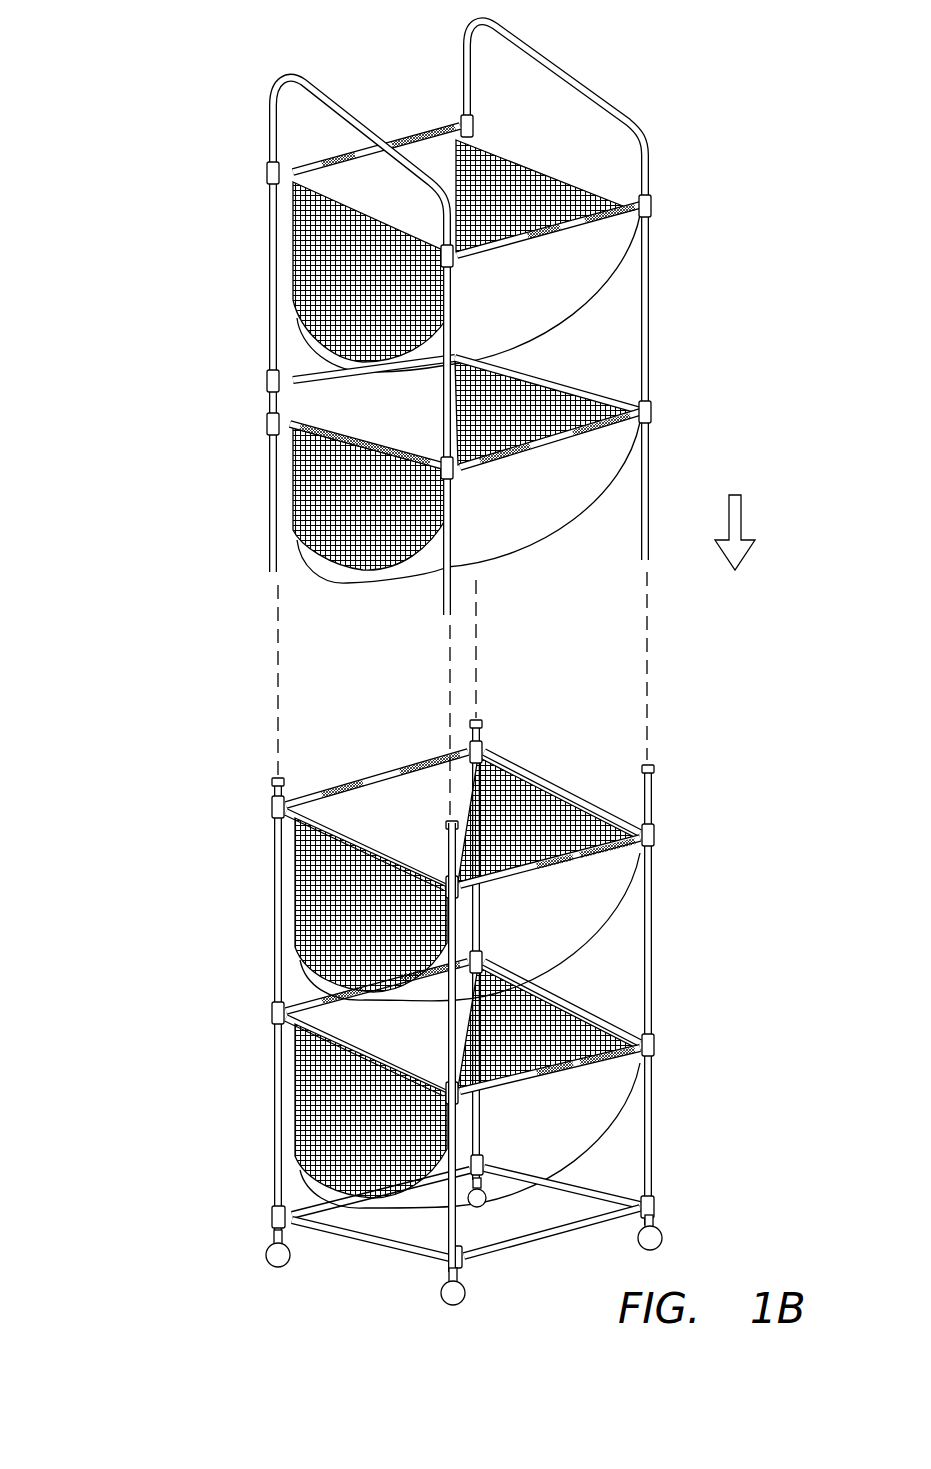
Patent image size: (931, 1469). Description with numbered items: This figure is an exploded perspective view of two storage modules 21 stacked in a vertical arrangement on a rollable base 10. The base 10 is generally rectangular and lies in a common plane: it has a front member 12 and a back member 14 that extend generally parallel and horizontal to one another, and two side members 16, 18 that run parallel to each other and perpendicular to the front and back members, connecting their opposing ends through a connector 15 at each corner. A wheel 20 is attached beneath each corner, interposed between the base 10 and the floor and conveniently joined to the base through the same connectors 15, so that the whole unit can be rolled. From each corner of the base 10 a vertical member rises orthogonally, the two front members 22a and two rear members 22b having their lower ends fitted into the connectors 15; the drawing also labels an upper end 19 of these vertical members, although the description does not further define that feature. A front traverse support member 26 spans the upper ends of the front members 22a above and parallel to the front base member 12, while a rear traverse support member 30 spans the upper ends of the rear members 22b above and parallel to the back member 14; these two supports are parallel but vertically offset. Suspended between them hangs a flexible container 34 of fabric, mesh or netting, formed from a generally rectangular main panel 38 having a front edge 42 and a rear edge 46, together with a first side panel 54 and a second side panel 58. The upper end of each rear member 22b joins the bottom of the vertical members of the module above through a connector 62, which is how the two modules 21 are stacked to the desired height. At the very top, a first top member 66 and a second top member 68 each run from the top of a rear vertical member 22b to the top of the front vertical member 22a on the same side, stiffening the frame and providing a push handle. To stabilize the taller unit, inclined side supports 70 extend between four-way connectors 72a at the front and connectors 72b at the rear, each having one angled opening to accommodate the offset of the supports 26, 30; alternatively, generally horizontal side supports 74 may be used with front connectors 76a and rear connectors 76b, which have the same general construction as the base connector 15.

The base 10 is at (391, 1262).
The front member 12 is at (565, 1228).
The back member 14 is at (310, 1205).
The connector 15 is at (275, 1215).
The side member 16 is at (372, 1236).
The side member 18 is at (560, 1182).
The post upper end 19 is at (480, 722).
The wheel 20 is at (266, 1252).
The storage module 21 is at (206, 240).
The front member 22a is at (650, 270).
The rear member 22b is at (270, 290).
The front traverse support member 26 is at (560, 372).
The rear traverse support member 30 is at (363, 140).
The container 34 is at (592, 866).
The main panel 38 is at (598, 245).
The front edge 42 is at (608, 205).
The rear edge 46 is at (420, 132).
The first side panel 54 is at (320, 235).
The second side panel 58 is at (487, 150).
The connector 62 is at (652, 1040).
The first top member 66 is at (302, 75).
The second top member 68 is at (533, 42).
The inclined side support 70 is at (560, 778).
The connector 72a is at (652, 838).
The connector 72b is at (282, 800).
The horizontal side support 74 is at (290, 385).
The front connector 76a is at (642, 420).
The rear connector 76b is at (285, 438).